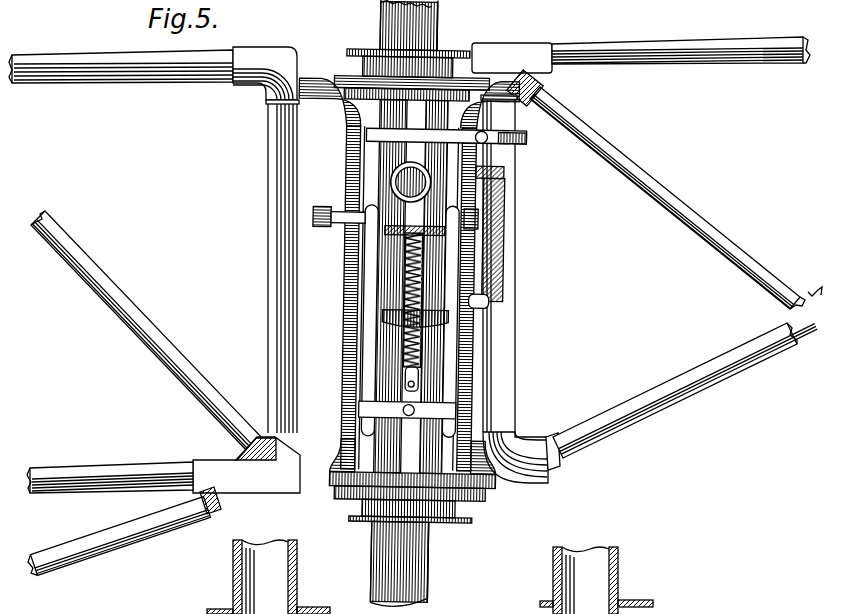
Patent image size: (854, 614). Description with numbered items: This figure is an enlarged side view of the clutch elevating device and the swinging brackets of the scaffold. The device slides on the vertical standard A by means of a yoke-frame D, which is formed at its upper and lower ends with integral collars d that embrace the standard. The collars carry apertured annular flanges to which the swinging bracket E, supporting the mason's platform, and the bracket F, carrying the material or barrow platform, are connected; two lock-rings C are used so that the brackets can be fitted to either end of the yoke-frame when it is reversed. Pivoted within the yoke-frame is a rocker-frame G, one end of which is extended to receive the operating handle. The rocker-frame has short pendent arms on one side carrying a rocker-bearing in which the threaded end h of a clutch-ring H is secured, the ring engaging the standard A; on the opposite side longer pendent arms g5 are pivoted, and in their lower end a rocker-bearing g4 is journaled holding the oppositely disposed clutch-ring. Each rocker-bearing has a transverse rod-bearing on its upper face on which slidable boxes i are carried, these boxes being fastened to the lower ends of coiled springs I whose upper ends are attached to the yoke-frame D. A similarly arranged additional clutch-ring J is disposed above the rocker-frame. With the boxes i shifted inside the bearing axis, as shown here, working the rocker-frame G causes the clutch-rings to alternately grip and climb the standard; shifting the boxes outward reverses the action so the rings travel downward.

The standard A is at (447, 552).
The lock-ring C is at (439, 43).
The collar d is at (467, 77).
The yoke-frame D is at (482, 320).
The swinging bracket E is at (641, 67).
The bracket F is at (153, 76).
The rocker-frame G is at (395, 182).
The rocker-bearing g4 is at (370, 426).
The pendent arm g5 is at (380, 290).
The clutch-ring H is at (390, 317).
The threaded end of clutch-ring h is at (407, 428).
The coiled spring I is at (495, 241).
The slidable box i is at (507, 177).
The additional clutch-ring J is at (370, 134).